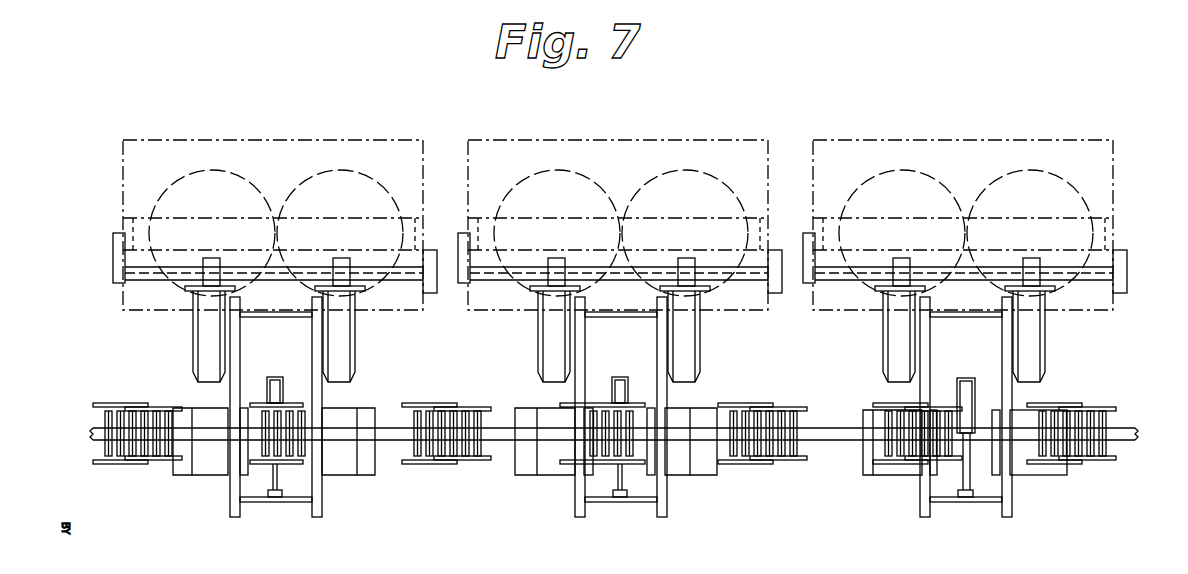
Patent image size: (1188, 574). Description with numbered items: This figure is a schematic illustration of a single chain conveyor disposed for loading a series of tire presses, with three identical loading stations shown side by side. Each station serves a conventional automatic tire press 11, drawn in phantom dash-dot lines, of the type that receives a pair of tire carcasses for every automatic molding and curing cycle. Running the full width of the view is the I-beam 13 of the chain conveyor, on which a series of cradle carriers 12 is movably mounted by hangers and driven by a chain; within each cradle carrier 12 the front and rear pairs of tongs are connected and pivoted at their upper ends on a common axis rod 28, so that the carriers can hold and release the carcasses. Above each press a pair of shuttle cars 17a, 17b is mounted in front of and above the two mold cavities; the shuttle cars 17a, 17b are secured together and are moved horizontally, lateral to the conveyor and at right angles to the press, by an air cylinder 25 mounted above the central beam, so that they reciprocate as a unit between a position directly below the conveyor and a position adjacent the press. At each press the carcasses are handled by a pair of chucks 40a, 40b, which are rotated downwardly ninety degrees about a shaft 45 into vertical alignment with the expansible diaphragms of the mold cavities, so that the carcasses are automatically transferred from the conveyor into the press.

The automatic tire press 11 is at (297, 131).
The cradle carrier 12 is at (131, 393).
The I-beam 13 is at (1118, 433).
The shuttle car 17a is at (205, 467).
The shuttle car 17b is at (343, 468).
The air cylinder 25 is at (283, 488).
The common axis rod 28 is at (140, 455).
The chuck 40a is at (208, 332).
The chuck 40b is at (345, 332).
The shaft 45 is at (284, 272).